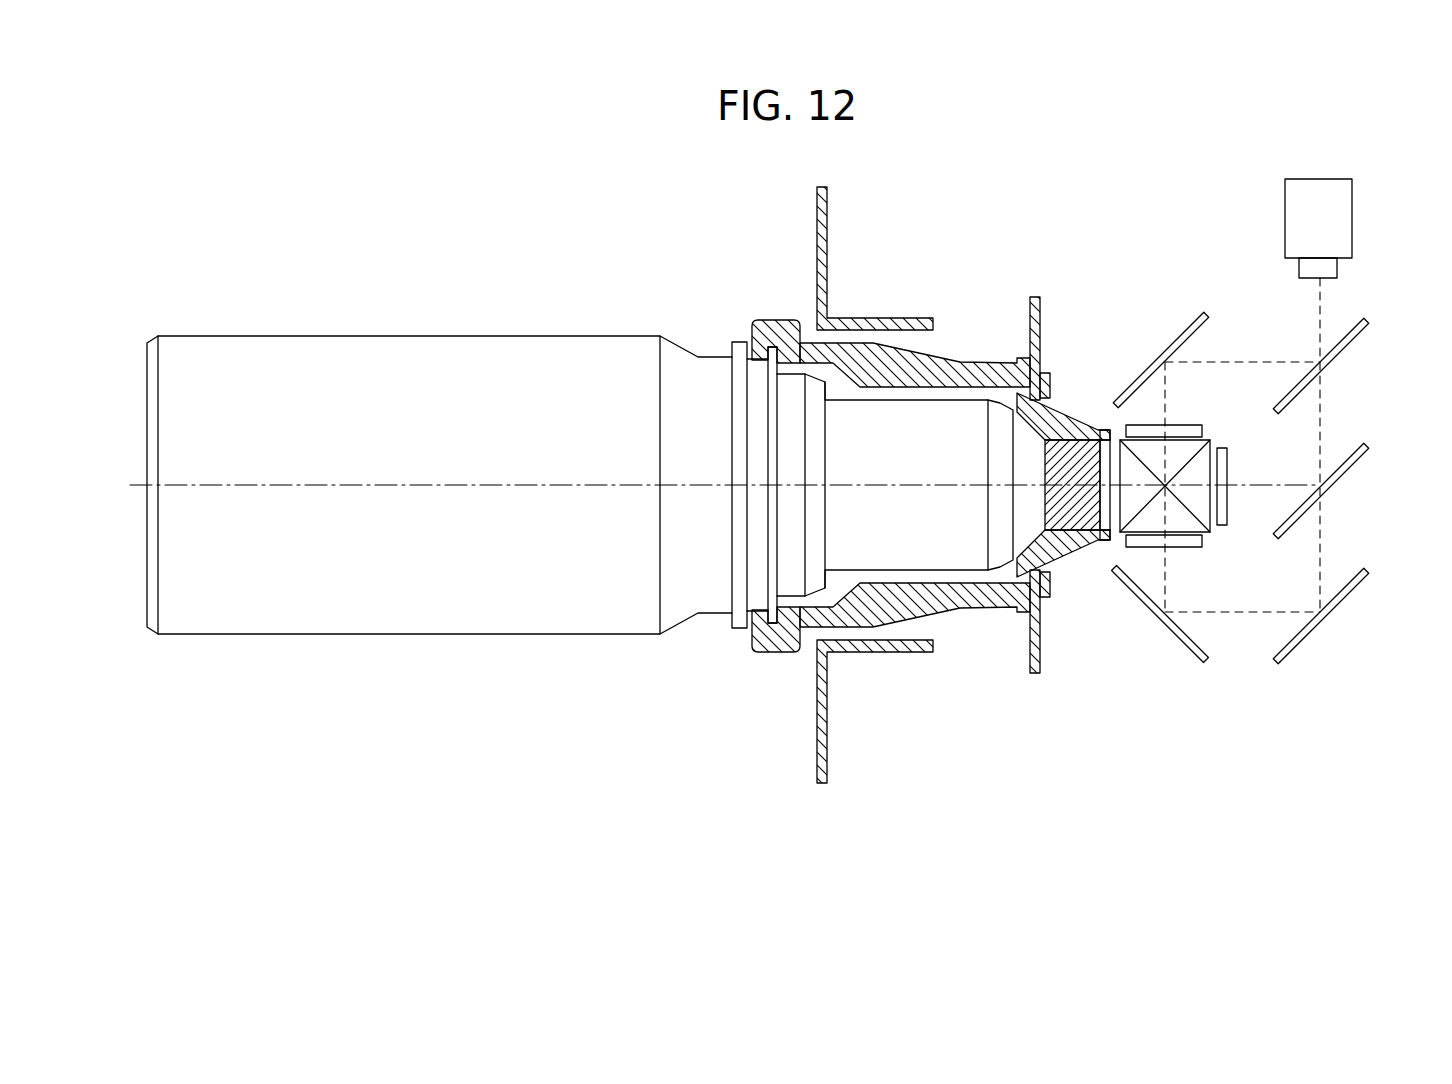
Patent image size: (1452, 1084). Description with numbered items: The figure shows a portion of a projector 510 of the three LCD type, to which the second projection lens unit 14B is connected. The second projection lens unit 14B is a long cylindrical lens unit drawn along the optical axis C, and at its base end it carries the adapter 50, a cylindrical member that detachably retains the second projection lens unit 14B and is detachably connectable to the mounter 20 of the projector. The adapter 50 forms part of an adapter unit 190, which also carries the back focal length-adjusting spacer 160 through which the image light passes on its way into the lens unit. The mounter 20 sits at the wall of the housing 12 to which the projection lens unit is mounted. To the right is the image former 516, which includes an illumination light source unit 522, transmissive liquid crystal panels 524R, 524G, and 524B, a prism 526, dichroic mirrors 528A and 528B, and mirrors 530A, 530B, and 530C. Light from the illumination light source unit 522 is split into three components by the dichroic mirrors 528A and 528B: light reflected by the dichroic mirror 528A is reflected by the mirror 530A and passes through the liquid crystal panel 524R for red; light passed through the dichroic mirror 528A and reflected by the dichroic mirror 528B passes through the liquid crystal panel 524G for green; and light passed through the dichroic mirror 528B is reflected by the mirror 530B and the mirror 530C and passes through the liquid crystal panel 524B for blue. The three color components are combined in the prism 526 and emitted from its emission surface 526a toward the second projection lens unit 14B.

The projector 510 is at (580, 409).
The second projection lens unit 14B is at (422, 427).
The optical axis C is at (718, 465).
The housing 12 is at (817, 235).
The adapter 50 is at (770, 318).
The adapter unit 190 is at (965, 348).
The mounter 20 is at (1030, 305).
The back focal length-adjusting spacer 160 is at (1045, 462).
The prism 526 is at (1118, 540).
The emission surface 526a is at (1118, 455).
The liquid crystal panel for green color 524G is at (1228, 452).
The liquid crystal panel for red color 524R is at (1198, 426).
The liquid crystal panel for blue color 524B is at (1204, 542).
The mirror 530A is at (1182, 325).
The mirror 530B is at (1353, 590).
The mirror 530C is at (1197, 653).
The dichroic mirror 528A is at (1353, 343).
The dichroic mirror 528B is at (1353, 467).
The illumination light source unit 522 is at (1352, 208).
The image former 516 is at (1338, 676).